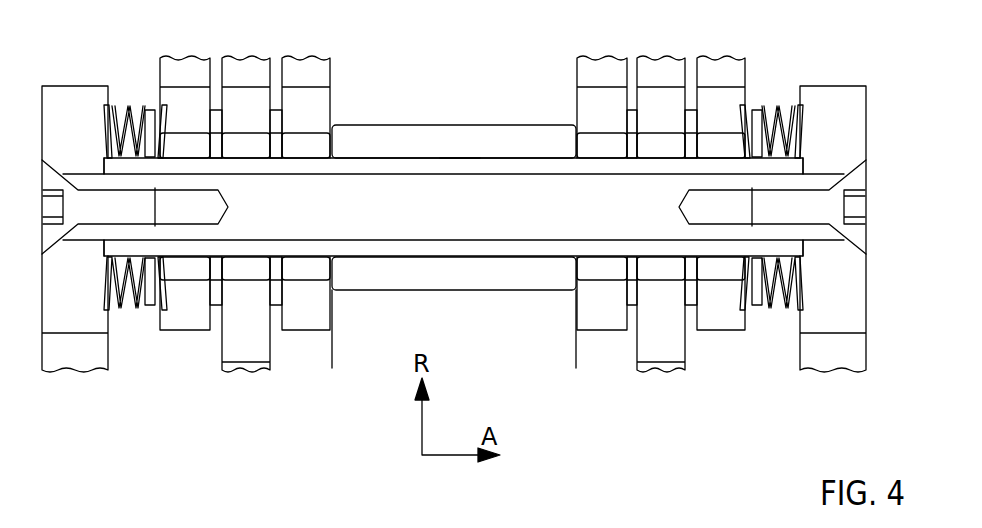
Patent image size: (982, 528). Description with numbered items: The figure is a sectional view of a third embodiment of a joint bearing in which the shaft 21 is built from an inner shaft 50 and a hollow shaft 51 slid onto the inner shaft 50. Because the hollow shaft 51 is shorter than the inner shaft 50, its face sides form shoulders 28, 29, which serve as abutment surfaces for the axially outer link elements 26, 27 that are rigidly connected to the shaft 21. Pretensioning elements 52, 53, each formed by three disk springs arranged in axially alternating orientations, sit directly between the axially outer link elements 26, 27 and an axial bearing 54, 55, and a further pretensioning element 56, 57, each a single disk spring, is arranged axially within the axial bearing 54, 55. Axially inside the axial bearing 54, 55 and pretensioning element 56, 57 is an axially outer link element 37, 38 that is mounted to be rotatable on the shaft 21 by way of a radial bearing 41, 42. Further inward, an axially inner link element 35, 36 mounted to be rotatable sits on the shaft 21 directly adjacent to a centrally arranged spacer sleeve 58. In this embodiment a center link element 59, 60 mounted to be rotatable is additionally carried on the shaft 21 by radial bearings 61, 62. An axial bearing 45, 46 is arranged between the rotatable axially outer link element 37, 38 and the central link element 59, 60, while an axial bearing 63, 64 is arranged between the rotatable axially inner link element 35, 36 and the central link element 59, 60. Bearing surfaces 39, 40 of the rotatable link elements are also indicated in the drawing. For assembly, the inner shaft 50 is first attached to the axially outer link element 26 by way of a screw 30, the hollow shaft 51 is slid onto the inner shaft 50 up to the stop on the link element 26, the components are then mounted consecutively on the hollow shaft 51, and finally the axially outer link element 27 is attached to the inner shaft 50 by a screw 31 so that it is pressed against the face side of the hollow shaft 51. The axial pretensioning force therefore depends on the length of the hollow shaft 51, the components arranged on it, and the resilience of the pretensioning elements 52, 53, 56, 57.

The shaft 21 is at (818, 168).
The axially outer link element 26 is at (852, 108).
The axially outer link element 27 is at (53, 108).
The shoulder 28 is at (804, 165).
The shoulder 29 is at (103, 163).
The screw 30 is at (818, 210).
The screw 31 is at (87, 210).
The axially inner link element 35 is at (603, 316).
The axially inner link element 36 is at (303, 318).
The axially outer link element mounted to be rotatable 37 is at (713, 318).
The axially outer link element mounted to be rotatable 38 is at (192, 320).
The lining 39 is at (578, 270).
The lining 40 is at (325, 270).
The radial bearing 41 is at (725, 272).
The radial bearing 42 is at (180, 270).
The axial bearing 45 is at (687, 118).
The axial bearing 46 is at (218, 118).
The inner shaft 50 is at (430, 200).
The hollow shaft 51 is at (463, 167).
The pretensioning element 52 is at (789, 108).
The pretensioning element 53 is at (119, 107).
The axial bearing 54 is at (758, 118).
The axial bearing 55 is at (145, 118).
The further pretensioning element 56 is at (748, 157).
The further pretensioning element 57 is at (162, 133).
The spacer sleeve 58 is at (456, 278).
The center link element 59 is at (660, 320).
The center link element 60 is at (248, 320).
The radial bearing 61 is at (655, 147).
The radial bearing 62 is at (252, 143).
The axial bearing 63 is at (627, 118).
The axial bearing 64 is at (280, 118).